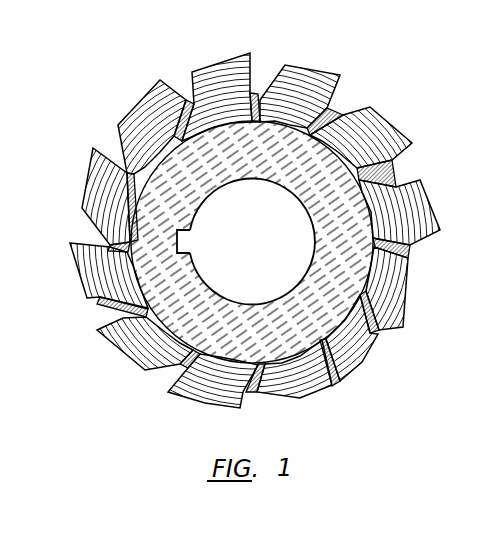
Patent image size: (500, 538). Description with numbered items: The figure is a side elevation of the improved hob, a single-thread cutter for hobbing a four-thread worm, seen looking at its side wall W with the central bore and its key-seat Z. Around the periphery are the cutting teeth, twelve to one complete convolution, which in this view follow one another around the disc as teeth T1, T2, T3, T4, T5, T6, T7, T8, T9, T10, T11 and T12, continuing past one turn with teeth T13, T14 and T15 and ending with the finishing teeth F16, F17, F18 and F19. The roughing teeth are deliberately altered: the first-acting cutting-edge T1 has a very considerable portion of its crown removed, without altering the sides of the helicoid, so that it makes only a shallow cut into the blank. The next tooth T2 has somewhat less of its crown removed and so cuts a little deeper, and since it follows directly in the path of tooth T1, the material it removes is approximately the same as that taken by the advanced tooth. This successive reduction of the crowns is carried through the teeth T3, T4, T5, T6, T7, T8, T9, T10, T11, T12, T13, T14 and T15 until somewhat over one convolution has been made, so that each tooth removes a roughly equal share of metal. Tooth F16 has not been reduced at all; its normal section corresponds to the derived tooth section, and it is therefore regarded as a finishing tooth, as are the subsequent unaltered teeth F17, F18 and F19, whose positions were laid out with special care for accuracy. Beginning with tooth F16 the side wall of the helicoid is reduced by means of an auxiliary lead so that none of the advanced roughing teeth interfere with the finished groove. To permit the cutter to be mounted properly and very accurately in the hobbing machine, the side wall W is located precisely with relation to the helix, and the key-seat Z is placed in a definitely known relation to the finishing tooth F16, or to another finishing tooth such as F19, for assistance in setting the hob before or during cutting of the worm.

The first-acting cutting-edge tooth T1 is at (110, 246).
The cutting tooth T2 is at (125, 172).
The cutting tooth T3 is at (186, 106).
The cutting tooth T4 is at (253, 92).
The cutting tooth T5 is at (330, 108).
The cutting tooth T6 is at (393, 165).
The cutting tooth T7 is at (418, 249).
The cutting tooth T8 is at (252, 242).
The cutting tooth T9 is at (337, 386).
The cutting tooth T10 is at (250, 412).
The cutting tooth T11 is at (168, 392).
The cutting tooth T12 is at (97, 330).
The cutting tooth T13 is at (232, 242).
The cutting tooth T14 is at (92, 148).
The cutting tooth T15 is at (161, 72).
The finishing tooth F16 is at (247, 60).
The finishing tooth F17 is at (325, 103).
The finishing tooth F18 is at (256, 242).
The finishing tooth F19 is at (438, 238).
The key-seat Z is at (181, 238).
The side wall W is at (224, 308).